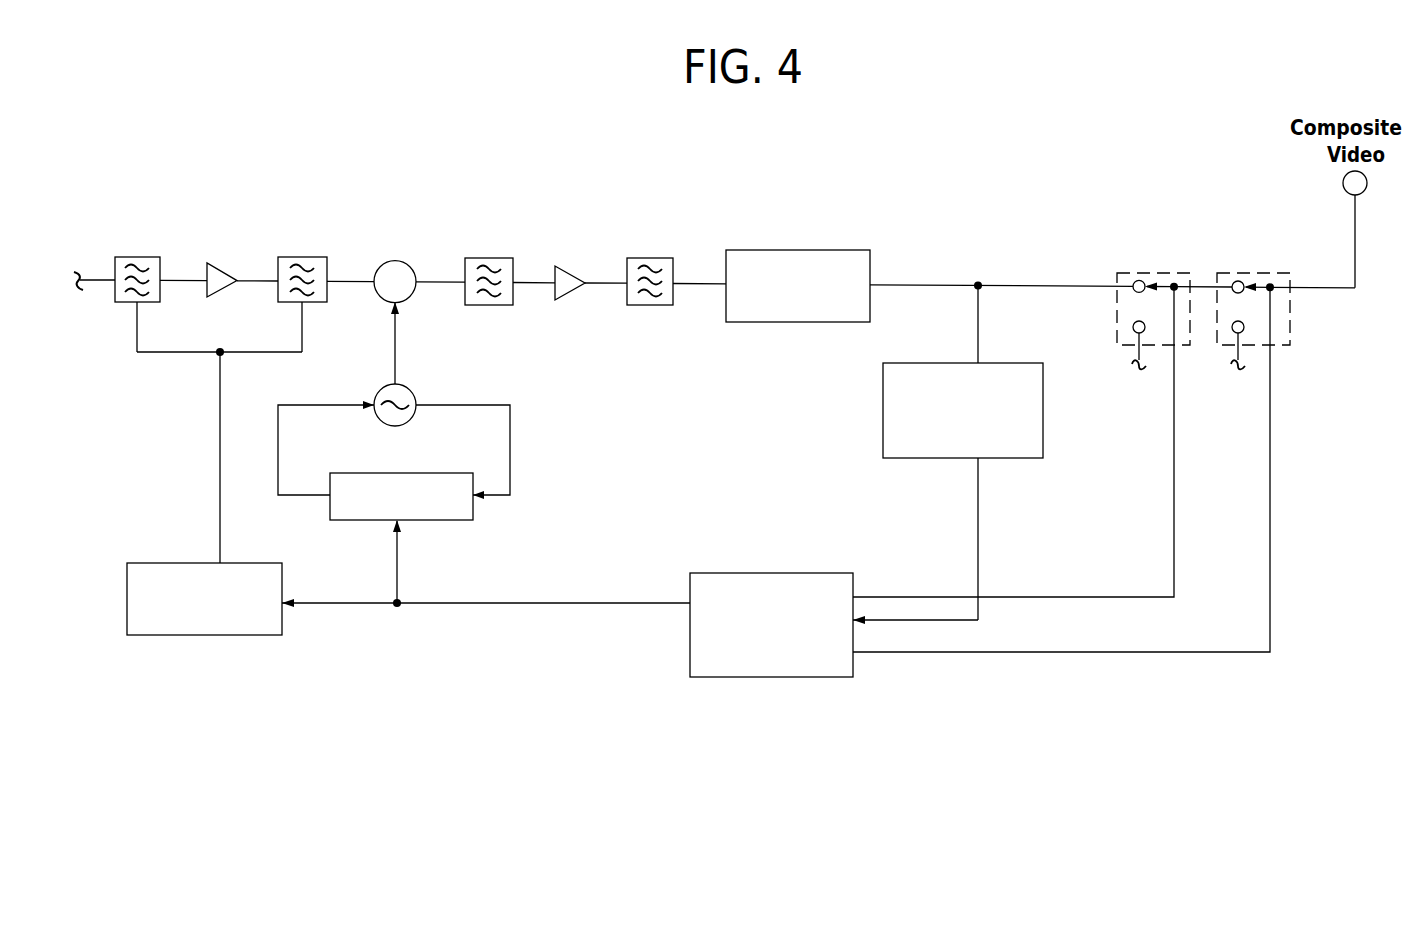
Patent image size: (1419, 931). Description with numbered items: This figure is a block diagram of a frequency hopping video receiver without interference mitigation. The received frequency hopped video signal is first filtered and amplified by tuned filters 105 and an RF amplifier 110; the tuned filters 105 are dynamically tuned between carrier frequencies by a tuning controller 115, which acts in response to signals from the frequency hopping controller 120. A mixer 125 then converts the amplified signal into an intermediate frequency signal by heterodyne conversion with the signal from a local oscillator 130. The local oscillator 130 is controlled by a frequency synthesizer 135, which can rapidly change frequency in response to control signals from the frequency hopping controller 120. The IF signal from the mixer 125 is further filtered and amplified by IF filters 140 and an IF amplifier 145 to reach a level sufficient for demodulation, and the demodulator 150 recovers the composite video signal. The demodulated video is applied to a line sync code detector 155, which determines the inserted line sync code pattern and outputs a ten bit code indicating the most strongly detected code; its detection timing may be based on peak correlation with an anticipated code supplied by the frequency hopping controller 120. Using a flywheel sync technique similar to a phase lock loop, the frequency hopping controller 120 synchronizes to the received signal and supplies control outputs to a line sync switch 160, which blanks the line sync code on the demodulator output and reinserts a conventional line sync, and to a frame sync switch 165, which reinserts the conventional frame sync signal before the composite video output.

The tuned filters 105 is at (122, 262).
The RF amplifier 110 is at (222, 276).
The tuning controller 115 is at (195, 567).
The frequency hopping controller 120 is at (708, 581).
The mixer 125 is at (395, 267).
The local oscillator 130 is at (403, 394).
The frequency synthesizer 135 is at (407, 480).
The IF filters 140 is at (498, 267).
The IF amplifier 145 is at (567, 278).
The demodulator 150 is at (772, 258).
The line sync code detector 155 is at (904, 370).
The line sync switch 160 is at (1124, 277).
The frame sync switch 165 is at (1221, 277).